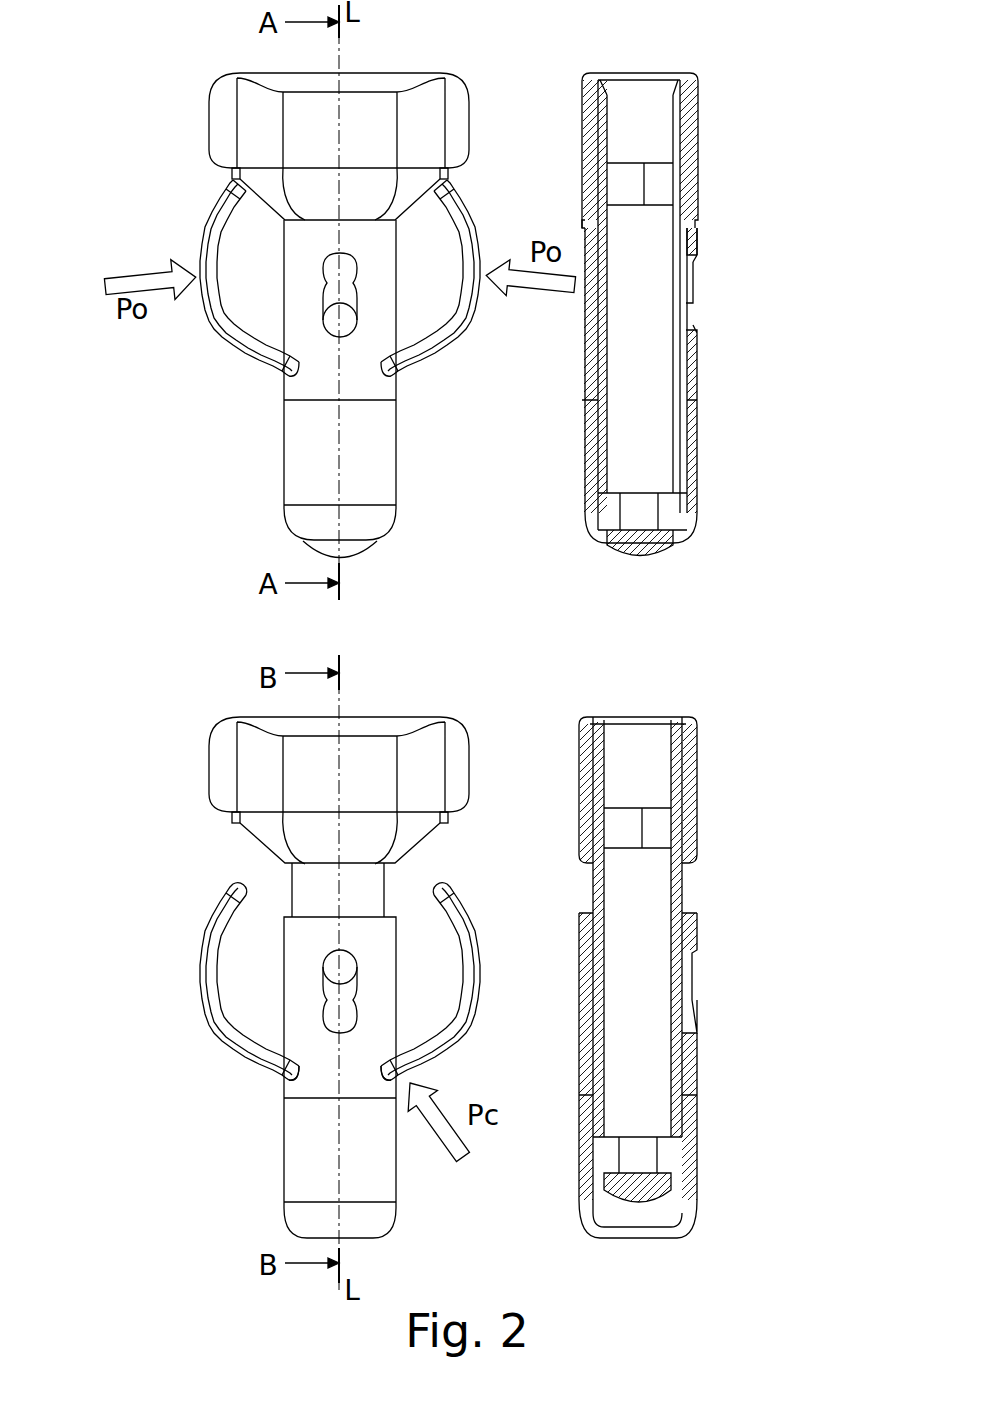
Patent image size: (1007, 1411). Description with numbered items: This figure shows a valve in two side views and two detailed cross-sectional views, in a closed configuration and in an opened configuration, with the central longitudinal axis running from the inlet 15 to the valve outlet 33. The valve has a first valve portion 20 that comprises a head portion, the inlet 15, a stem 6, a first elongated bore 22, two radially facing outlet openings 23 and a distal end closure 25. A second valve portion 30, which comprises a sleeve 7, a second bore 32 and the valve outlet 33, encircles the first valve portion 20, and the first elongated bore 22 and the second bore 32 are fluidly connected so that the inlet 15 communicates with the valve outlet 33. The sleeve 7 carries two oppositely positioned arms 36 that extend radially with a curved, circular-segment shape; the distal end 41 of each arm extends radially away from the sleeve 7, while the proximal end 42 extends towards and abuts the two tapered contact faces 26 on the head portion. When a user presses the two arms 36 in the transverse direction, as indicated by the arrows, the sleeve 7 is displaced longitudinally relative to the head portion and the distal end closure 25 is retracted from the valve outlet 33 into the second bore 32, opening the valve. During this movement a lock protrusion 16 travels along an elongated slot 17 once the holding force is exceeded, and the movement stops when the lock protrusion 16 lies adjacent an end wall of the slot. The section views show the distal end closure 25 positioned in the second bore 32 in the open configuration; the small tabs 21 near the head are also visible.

The stem 6 is at (680, 440).
The sleeve 7 is at (320, 440).
The inlet 15 is at (660, 73).
The lock protrusion 16 is at (332, 320).
The elongated slot 17 is at (325, 260).
The first valve portion 20 is at (313, 135).
The tab 21 is at (236, 172).
The first elongated bore 22 is at (655, 380).
The radially facing outlet opening 23 is at (667, 497).
The distal end closure 25 is at (645, 548).
The tapered contact face 26 is at (262, 845).
The second valve portion 30 is at (580, 432).
The second bore 32 is at (608, 512).
The valve outlet 33 is at (595, 538).
The arm 36 is at (208, 236).
The distal end of the arm 41 is at (280, 1082).
The proximal end of the arm 42 is at (233, 878).